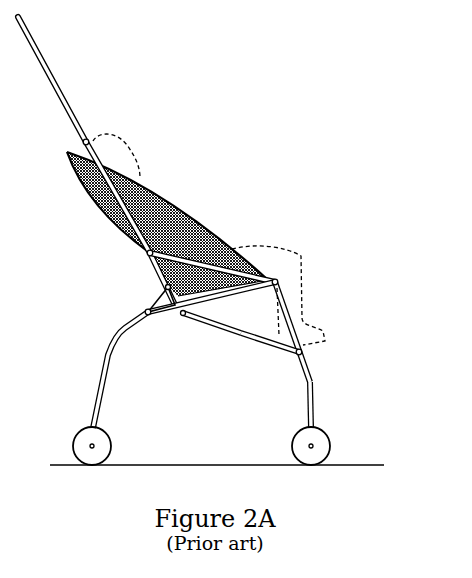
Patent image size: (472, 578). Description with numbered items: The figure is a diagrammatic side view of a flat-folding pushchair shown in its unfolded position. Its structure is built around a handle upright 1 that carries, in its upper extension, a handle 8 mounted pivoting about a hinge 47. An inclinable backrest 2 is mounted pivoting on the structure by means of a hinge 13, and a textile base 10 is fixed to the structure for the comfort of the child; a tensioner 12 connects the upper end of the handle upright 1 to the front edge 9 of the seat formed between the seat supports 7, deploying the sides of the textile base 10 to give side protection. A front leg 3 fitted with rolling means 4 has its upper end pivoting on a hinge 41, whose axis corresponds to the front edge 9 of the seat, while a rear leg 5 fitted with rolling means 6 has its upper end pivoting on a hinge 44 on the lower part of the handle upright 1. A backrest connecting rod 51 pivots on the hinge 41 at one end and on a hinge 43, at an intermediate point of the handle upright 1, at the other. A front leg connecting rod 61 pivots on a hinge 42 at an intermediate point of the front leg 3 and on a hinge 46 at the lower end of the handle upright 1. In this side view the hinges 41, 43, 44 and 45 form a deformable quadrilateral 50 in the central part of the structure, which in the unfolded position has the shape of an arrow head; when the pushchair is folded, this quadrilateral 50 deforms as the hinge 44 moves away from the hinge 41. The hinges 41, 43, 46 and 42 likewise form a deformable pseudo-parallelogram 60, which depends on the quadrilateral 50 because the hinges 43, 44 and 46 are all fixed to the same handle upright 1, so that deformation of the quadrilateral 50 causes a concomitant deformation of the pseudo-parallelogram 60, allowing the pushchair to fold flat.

The handle upright 1 is at (153, 184).
The inclinable backrest 2 is at (84, 181).
The front leg 3 is at (300, 381).
The rolling means 4 is at (327, 430).
The rear leg 5 is at (105, 355).
The rolling means 6 is at (78, 425).
The seat support 7 is at (224, 329).
The handle 8 is at (56, 70).
The front edge of the seat 9 is at (280, 281).
The textile base 10 is at (174, 195).
The tensioner 12 is at (217, 236).
The hinge 13 is at (156, 297).
The hinge 41 is at (280, 275).
The hinge 42 is at (303, 353).
The hinge 43 is at (147, 252).
The hinge 44 is at (164, 286).
The hinge 45 is at (144, 312).
The hinge 46 is at (182, 317).
The hinge 47 is at (83, 140).
The deformable quadrilateral 50 is at (275, 281).
The backrest connecting rod 51 is at (251, 254).
The deformable pseudo-parallelogram 60 is at (292, 308).
The front leg connecting rod 61 is at (253, 340).